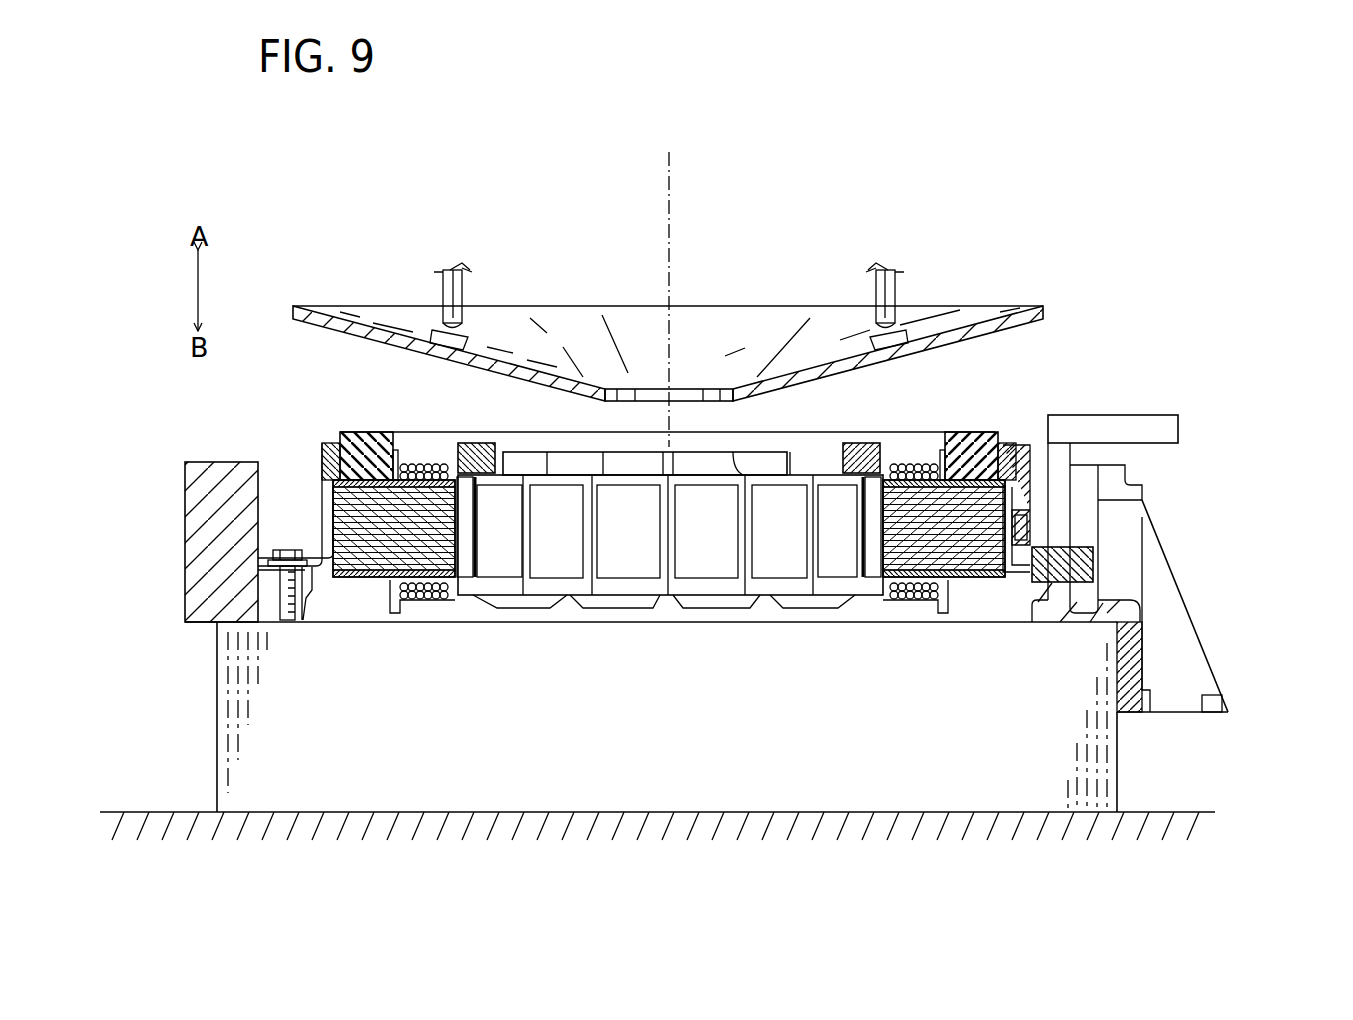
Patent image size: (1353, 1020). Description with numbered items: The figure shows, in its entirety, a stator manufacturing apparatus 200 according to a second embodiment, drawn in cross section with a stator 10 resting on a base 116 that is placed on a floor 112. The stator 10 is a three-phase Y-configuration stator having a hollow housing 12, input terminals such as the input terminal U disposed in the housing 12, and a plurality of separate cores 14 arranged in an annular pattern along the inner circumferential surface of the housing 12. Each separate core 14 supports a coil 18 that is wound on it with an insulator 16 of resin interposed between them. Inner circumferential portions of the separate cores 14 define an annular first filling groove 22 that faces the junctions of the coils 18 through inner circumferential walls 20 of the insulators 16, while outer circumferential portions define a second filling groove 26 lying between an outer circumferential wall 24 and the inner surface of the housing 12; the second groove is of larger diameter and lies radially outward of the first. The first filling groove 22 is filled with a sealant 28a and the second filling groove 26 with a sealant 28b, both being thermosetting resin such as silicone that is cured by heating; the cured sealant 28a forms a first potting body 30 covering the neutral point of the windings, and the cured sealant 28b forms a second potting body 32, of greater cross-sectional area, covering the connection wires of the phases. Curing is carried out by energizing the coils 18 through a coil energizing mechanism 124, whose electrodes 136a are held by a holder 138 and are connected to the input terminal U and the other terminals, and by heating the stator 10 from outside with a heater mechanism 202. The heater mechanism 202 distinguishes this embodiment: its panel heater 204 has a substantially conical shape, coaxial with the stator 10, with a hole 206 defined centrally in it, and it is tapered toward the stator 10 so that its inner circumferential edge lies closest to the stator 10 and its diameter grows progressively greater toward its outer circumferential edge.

The stator 10 is at (750, 522).
The housing 12 is at (1088, 615).
The separate cores 14 is at (336, 602).
The insulators 16 is at (360, 583).
The coils 18 is at (415, 600).
The inner circumferential walls 20 is at (507, 458).
The first filling groove 22 is at (872, 446).
The outer circumferential wall 24 is at (938, 465).
The second filling groove 26 is at (968, 462).
The sealant 28a is at (531, 437).
The sealant 28b is at (341, 406).
The first potting body 30 is at (478, 440).
The second potting body 32 is at (333, 432).
The floor 112 is at (153, 812).
The base 116 is at (1042, 752).
The coil energizing mechanism 124 is at (1173, 476).
The electrodes 136a is at (1063, 480).
The holder 138 is at (1178, 431).
The stator manufacturing apparatus 200 is at (1032, 114).
The heater mechanism 202 is at (678, 329).
The panel heater 204 is at (1024, 334).
The hole 206 is at (702, 390).
The input terminal U is at (1082, 564).